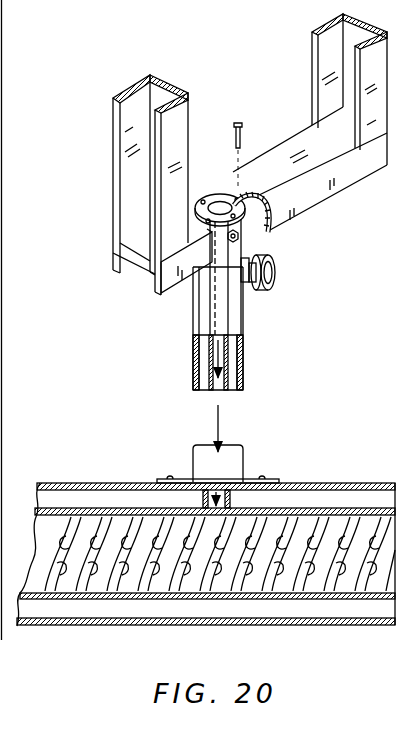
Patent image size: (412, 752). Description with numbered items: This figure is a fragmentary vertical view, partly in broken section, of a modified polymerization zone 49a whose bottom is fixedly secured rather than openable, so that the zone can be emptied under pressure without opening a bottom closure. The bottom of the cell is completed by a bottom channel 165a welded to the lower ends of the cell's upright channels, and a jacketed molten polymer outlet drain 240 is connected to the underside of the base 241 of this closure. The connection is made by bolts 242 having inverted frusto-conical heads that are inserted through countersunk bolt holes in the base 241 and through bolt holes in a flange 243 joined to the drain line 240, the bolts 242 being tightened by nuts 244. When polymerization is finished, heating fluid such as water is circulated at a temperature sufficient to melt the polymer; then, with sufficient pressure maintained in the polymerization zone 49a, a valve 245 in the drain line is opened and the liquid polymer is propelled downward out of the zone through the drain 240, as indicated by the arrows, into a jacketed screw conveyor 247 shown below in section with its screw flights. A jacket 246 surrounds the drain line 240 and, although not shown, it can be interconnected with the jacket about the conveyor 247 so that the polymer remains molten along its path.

The polymerization zone 49a is at (216, 126).
The jacketed molten polymer outlet drain 240 is at (212, 203).
The base 241 is at (147, 265).
The bolts 242 is at (245, 130).
The flange 243 is at (257, 198).
The nuts 244 is at (240, 239).
The valve 245 is at (262, 291).
The jacket 246 is at (205, 392).
The jacketed screw conveyor 247 is at (45, 540).
The bottom channel 165a is at (177, 278).